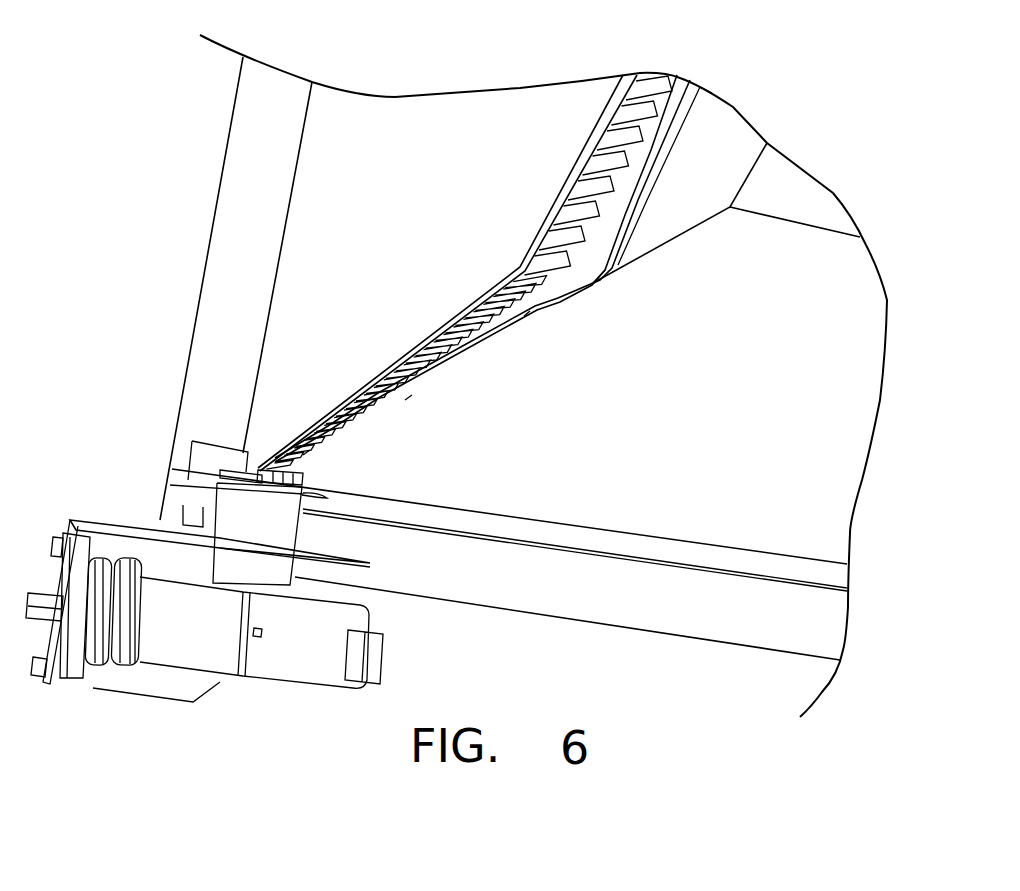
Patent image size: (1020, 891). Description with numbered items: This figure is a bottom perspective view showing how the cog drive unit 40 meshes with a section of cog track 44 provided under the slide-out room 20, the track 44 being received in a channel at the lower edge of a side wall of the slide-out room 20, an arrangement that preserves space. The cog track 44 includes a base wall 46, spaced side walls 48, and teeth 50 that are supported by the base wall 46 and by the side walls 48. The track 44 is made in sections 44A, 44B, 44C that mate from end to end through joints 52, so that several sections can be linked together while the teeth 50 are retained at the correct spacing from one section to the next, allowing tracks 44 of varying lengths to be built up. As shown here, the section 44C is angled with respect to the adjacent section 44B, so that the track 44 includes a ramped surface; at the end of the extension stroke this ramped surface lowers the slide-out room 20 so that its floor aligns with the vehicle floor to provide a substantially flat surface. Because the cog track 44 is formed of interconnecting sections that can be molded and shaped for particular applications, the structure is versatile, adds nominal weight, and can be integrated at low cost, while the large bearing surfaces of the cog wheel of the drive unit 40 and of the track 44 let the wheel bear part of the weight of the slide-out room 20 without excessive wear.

The slide-out room 20 is at (212, 290).
The cog drive unit 40 is at (119, 524).
The cog track 44 is at (484, 282).
The track section 44A is at (333, 418).
The track section 44B is at (418, 388).
The track section 44C is at (565, 298).
The base wall 46 is at (597, 178).
The side walls 48 is at (592, 242).
The teeth 50 is at (522, 308).
The joints 52 is at (305, 455).